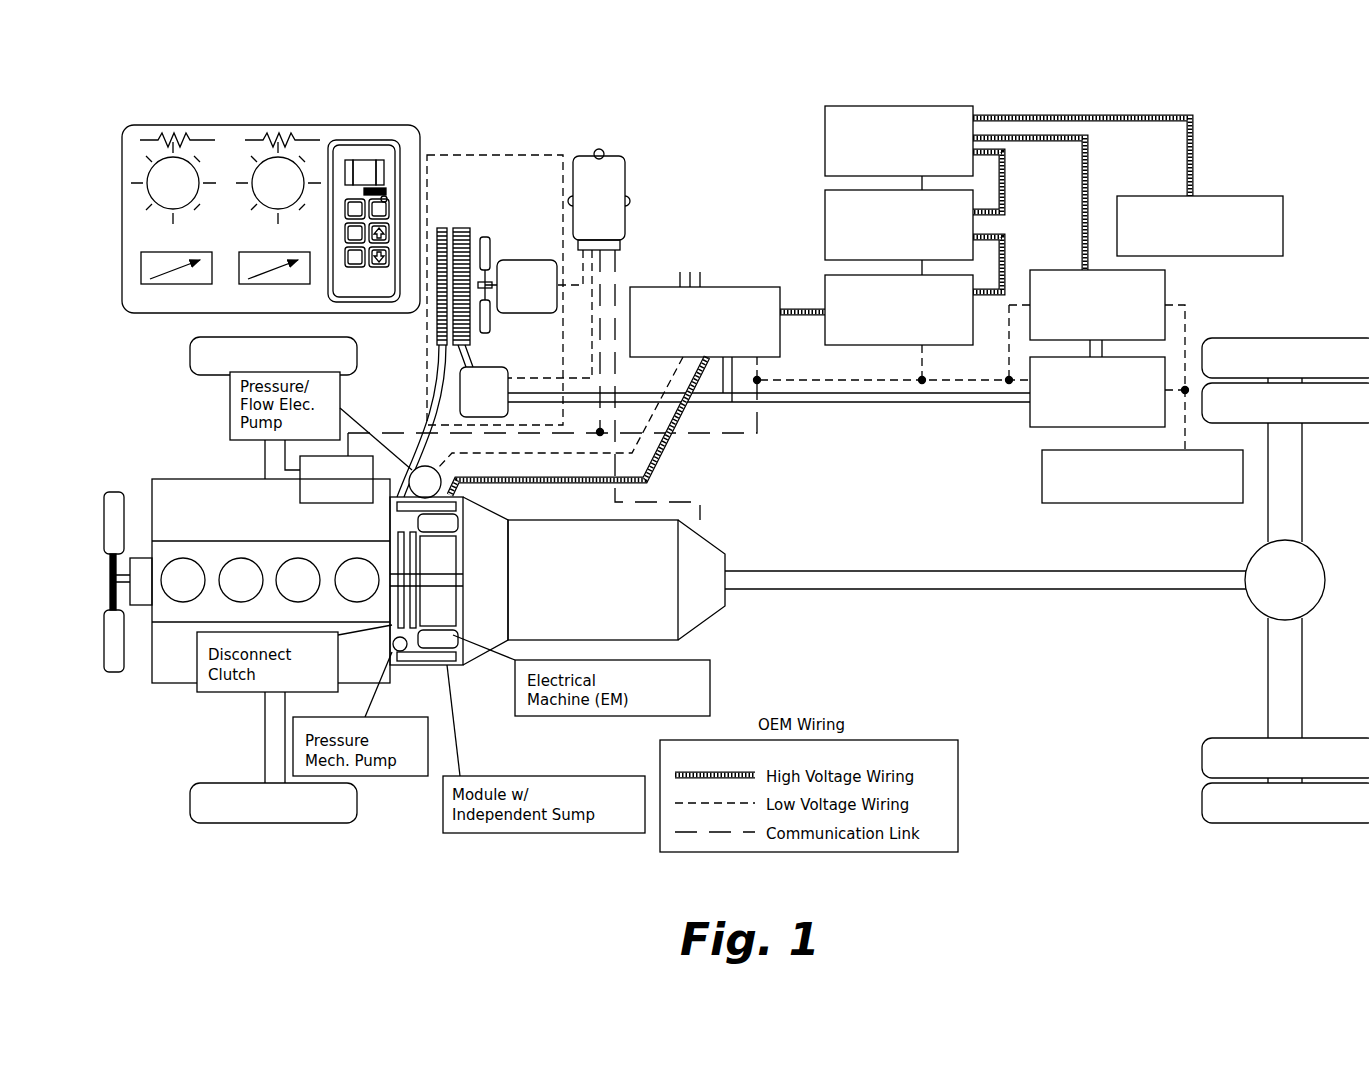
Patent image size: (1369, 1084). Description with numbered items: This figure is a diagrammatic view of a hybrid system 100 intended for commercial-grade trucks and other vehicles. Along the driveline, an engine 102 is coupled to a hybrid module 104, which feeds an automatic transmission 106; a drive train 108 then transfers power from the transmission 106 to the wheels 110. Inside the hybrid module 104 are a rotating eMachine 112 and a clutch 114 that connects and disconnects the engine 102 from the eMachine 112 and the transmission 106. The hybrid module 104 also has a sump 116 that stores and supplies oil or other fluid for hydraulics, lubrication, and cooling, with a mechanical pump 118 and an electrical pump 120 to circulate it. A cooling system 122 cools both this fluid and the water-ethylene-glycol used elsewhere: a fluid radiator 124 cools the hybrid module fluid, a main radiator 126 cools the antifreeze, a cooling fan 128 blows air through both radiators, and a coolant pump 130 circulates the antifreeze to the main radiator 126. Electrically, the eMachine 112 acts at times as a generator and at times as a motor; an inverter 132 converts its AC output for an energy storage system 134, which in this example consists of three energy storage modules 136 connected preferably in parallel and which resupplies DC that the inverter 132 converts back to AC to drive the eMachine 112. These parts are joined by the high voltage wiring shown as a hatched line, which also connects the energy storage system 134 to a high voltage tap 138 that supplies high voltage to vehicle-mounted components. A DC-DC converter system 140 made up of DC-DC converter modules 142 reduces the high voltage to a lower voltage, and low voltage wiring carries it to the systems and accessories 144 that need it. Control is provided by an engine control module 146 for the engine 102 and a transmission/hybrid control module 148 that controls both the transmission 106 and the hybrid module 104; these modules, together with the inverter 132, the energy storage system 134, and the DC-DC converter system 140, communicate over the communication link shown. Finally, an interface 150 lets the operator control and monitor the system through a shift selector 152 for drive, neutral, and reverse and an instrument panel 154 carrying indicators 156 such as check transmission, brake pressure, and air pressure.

The hybrid system 100 is at (1240, 118).
The engine 102 is at (157, 479).
The hybrid module 104 is at (422, 663).
The automatic transmission 106 is at (718, 550).
The drive train 108 is at (1008, 592).
The wheels 110 is at (1336, 337).
The eMachine 112 is at (458, 645).
The clutch 114 is at (398, 560).
The sump 116 is at (437, 665).
The mechanical pump 118 is at (392, 650).
The electrical pump 120 is at (412, 470).
The cooling system 122 is at (477, 150).
The fluid radiator 124 is at (440, 330).
The main radiator 126 is at (462, 245).
The cooling fan 128 is at (543, 260).
The coolant pump 130 is at (498, 367).
The inverter 132 is at (733, 285).
The energy storage system 134 is at (845, 100).
The energy storage module 136 is at (956, 106).
The high voltage tap 138 is at (1285, 233).
The DC-DC converter system 140 is at (1182, 280).
The DC-DC converter module 142 is at (1072, 270).
The systems and accessories 144 is at (1143, 505).
The engine control module 146 is at (300, 477).
The transmission/hybrid control module 148 is at (587, 152).
The interface 150 is at (258, 97).
The shift selector 152 is at (358, 137).
The instrument panel 154 is at (143, 165).
The indicators 156 is at (160, 205).